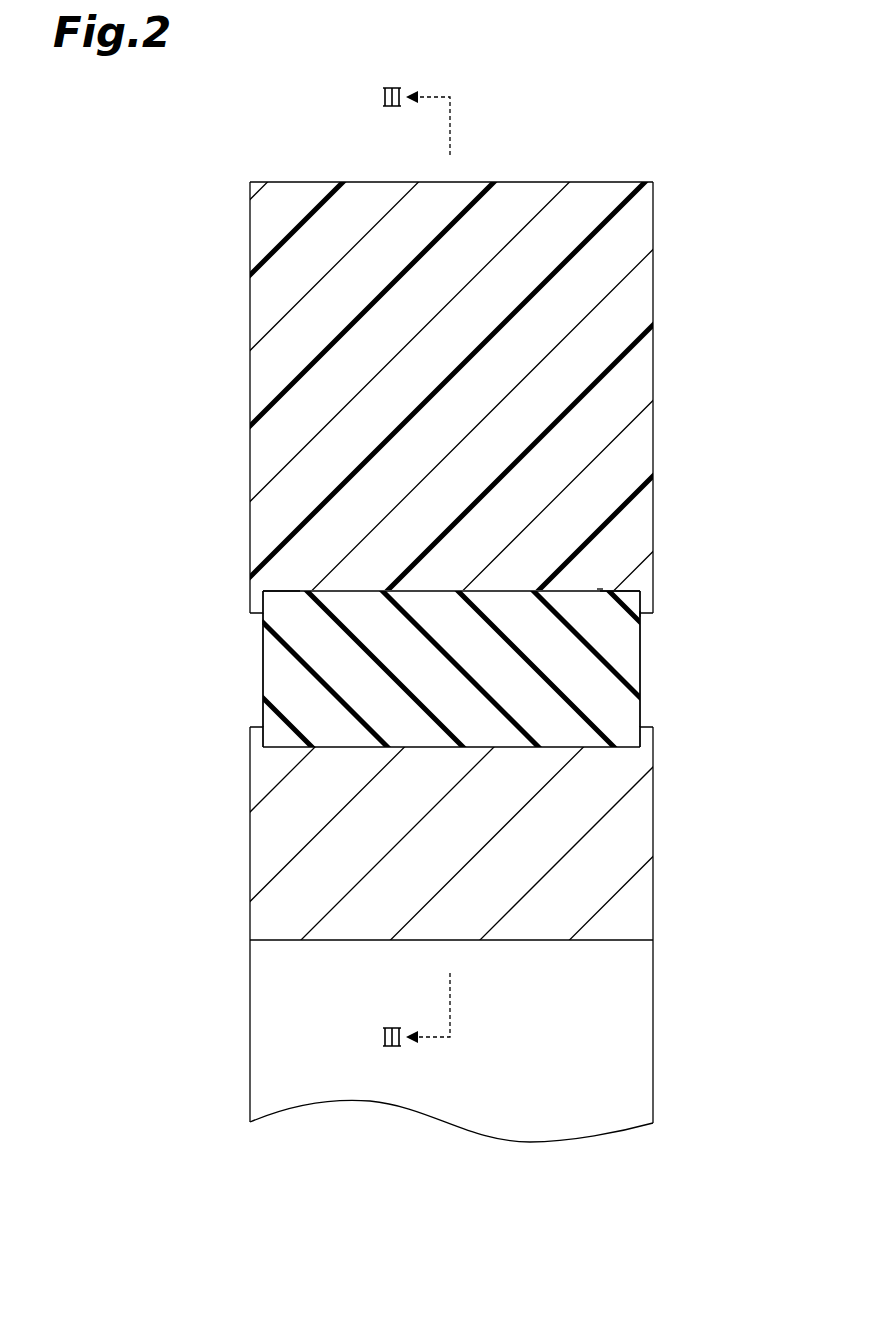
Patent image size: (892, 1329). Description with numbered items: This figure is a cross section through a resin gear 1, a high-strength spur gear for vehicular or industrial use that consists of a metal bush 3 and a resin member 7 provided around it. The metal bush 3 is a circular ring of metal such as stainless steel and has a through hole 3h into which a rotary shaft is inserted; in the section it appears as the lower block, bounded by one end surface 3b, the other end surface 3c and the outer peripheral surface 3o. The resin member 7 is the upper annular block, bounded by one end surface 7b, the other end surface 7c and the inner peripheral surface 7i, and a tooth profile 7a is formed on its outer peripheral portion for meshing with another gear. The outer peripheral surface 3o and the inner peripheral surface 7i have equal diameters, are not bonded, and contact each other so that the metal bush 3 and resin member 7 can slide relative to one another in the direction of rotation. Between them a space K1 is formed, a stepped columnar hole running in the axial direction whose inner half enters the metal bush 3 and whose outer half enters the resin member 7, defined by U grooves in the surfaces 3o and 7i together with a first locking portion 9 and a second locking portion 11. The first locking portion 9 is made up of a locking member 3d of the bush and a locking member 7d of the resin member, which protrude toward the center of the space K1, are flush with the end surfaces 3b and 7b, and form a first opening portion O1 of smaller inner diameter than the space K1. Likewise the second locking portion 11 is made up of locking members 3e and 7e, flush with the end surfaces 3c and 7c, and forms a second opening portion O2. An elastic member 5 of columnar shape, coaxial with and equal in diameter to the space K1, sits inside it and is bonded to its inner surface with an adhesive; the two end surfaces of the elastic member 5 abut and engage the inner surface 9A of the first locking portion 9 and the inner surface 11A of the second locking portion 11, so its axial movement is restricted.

The resin gear 1 is at (166, 208).
The metal bush 3 is at (638, 832).
The one end surface of the metal bush 3b is at (249, 884).
The other end surface of the metal bush 3c is at (654, 900).
The locking member of the metal bush 3d is at (258, 733).
The locking member of the metal bush 3e is at (654, 733).
The outer peripheral surface of the metal bush 3o is at (345, 745).
The through hole 3h is at (582, 1052).
The elastic member 5 is at (627, 667).
The resin member 7 is at (637, 294).
The tooth profile 7a is at (628, 182).
The one end surface of the resin member 7b is at (249, 382).
The other end surface of the resin member 7c is at (654, 441).
The locking member of the resin member 7d is at (257, 605).
The locking member of the resin member 7e is at (650, 596).
The inner peripheral surface of the resin member 7i is at (290, 593).
The first locking portion 9 is at (158, 585).
The inner surface of the first locking portion 9A is at (277, 588).
The second locking portion 11 is at (749, 585).
The inner surface of the second locking portion 11A is at (620, 588).
The space K1 is at (600, 588).
The first opening portion O1 is at (263, 622).
The second opening portion O2 is at (640, 614).